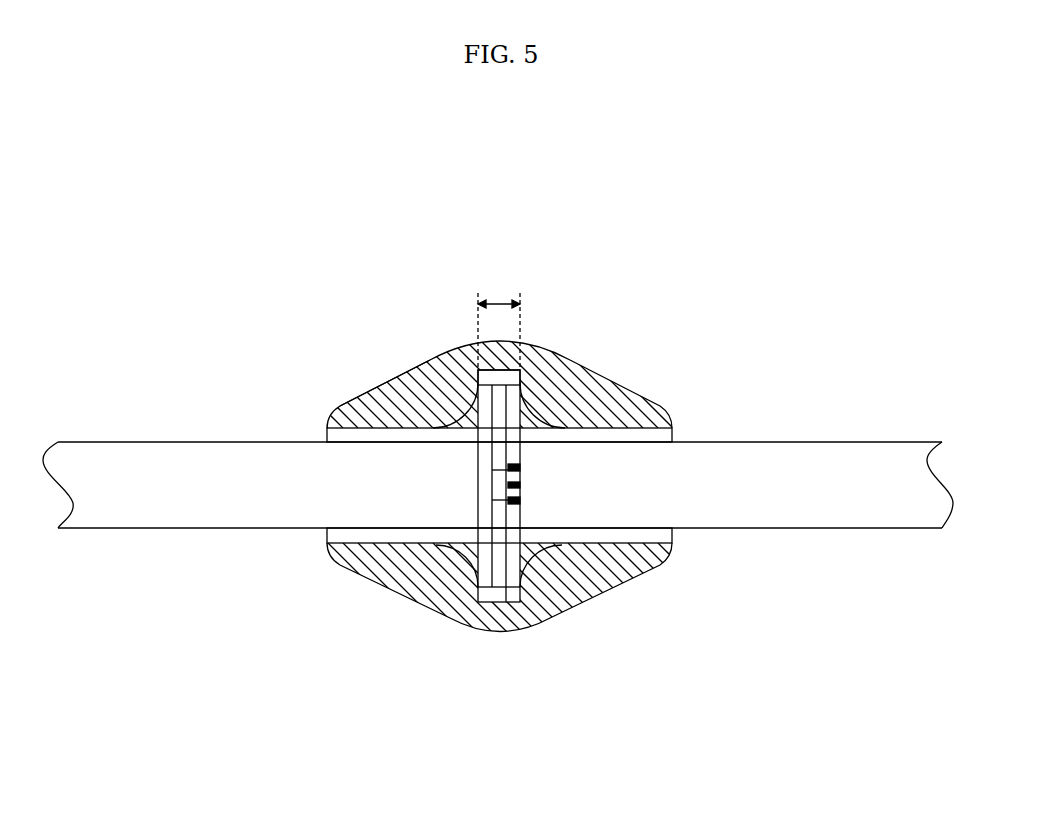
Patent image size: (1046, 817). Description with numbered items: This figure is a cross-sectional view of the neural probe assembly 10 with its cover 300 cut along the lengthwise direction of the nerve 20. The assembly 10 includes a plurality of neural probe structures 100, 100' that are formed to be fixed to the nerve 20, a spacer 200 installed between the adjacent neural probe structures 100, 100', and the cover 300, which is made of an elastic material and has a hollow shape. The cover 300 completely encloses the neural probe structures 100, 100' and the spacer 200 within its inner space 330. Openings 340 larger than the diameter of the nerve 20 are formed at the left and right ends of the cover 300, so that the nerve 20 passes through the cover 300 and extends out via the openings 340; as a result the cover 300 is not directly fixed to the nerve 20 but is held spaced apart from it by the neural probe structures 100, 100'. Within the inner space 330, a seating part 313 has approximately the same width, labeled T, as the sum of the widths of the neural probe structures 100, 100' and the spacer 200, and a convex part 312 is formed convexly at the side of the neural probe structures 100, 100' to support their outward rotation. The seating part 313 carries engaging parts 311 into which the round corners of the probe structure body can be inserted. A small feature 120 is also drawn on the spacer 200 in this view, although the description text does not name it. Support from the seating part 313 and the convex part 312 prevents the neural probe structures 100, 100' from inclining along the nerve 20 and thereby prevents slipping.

The neural probe assembly 10 is at (437, 280).
The nerve 20 is at (823, 457).
The neural probe structure 100 is at (572, 621).
The neural probe structure 100' is at (422, 621).
The engagement protrusions 120 is at (520, 502).
The spacer 200 is at (497, 570).
The cover 300 is at (628, 388).
The engaging parts 311 is at (505, 357).
The convex part 312 is at (452, 412).
The seating part 313 is at (520, 377).
The inner space 330 is at (402, 557).
The openings 340 is at (326, 435).